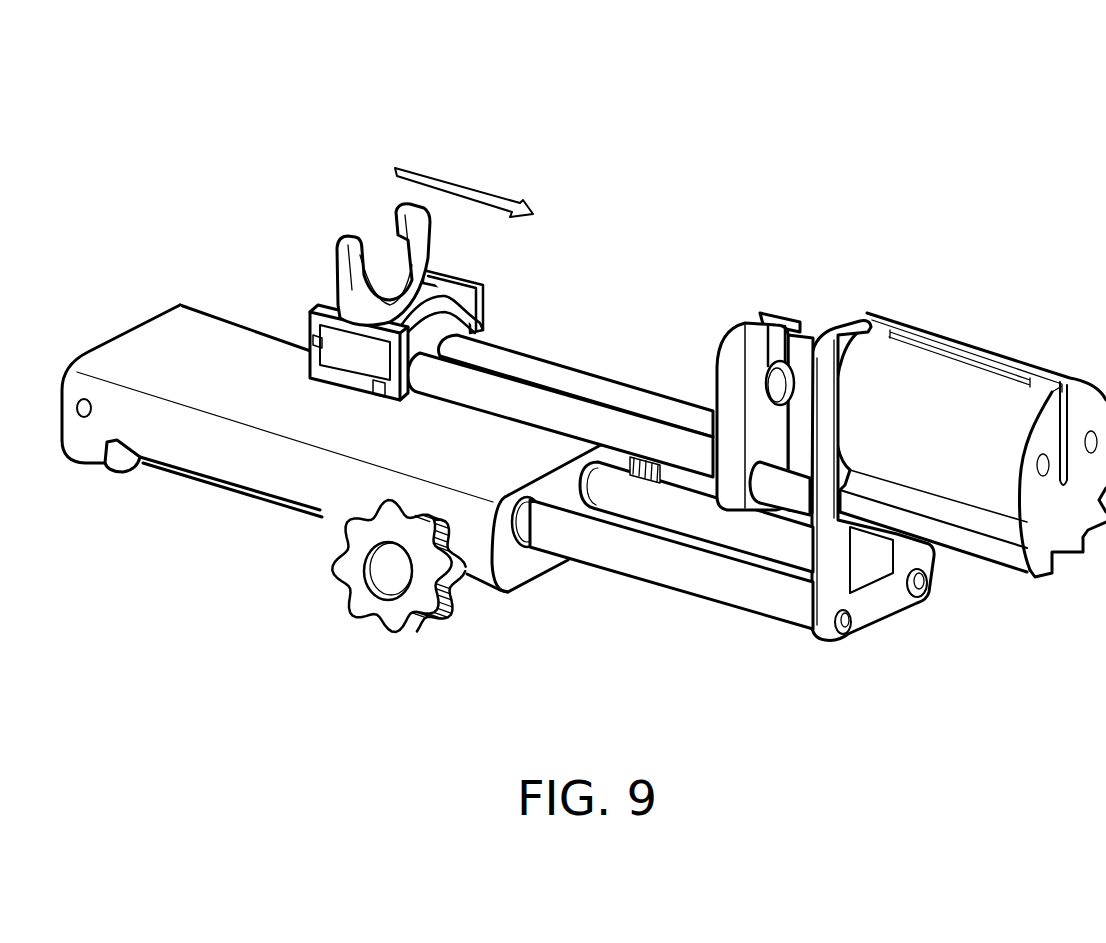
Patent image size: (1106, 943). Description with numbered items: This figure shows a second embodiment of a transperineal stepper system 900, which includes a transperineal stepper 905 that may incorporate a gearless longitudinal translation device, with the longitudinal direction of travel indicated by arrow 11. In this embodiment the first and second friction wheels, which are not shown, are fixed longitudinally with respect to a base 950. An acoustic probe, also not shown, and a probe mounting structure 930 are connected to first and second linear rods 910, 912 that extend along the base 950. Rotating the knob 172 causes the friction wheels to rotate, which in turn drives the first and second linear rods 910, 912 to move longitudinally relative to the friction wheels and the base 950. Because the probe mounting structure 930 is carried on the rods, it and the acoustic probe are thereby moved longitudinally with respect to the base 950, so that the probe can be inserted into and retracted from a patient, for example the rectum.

The transperineal stepper system 900 is at (973, 122).
The direction of movement 11 is at (488, 188).
The transperineal stepper 905 is at (277, 293).
The probe mounting structure 930 is at (600, 370).
The base 950 is at (192, 483).
The knob 172 is at (362, 607).
The first linear rod 910 is at (610, 570).
The second linear rod 912 is at (710, 543).